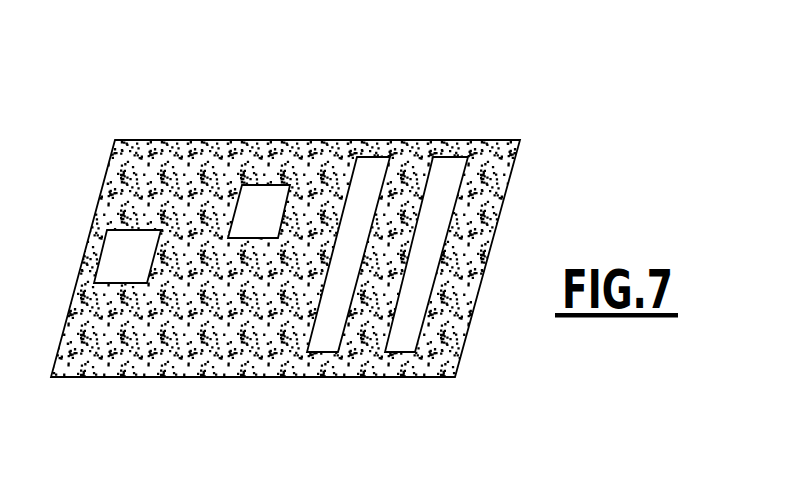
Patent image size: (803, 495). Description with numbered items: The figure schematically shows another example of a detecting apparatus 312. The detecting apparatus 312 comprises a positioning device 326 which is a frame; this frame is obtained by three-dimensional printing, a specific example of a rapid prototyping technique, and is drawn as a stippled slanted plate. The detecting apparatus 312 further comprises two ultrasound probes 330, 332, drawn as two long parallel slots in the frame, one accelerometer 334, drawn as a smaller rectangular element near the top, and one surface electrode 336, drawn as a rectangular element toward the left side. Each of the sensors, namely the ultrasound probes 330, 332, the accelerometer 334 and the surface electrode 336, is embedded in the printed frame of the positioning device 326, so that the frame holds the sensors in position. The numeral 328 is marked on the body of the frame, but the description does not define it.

The detecting apparatus 312 is at (519, 98).
The positioning device 326 is at (163, 378).
The stippled coating layer 328 is at (207, 317).
The ultrasound probe 330 is at (443, 172).
The ultrasound probe 332 is at (370, 168).
The accelerometer 334 is at (264, 183).
The surface electrode 336 is at (116, 247).